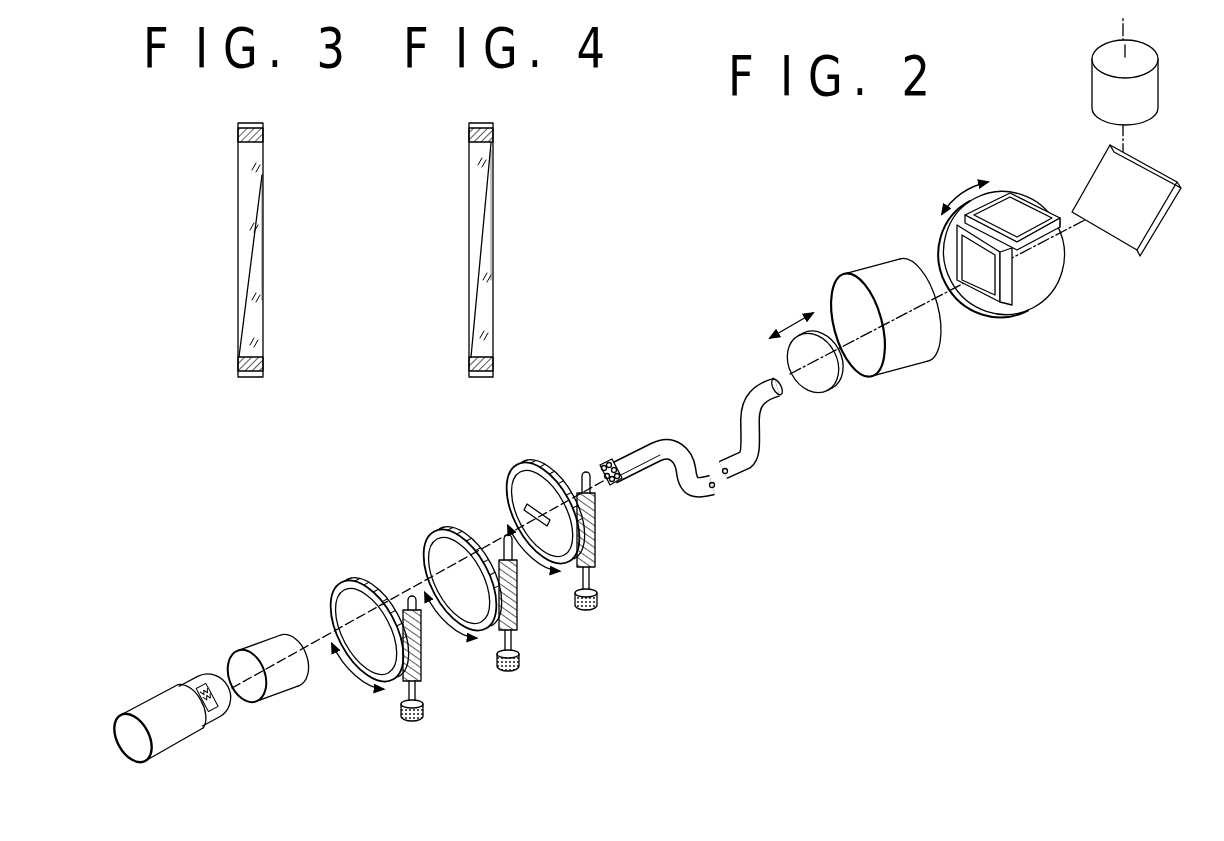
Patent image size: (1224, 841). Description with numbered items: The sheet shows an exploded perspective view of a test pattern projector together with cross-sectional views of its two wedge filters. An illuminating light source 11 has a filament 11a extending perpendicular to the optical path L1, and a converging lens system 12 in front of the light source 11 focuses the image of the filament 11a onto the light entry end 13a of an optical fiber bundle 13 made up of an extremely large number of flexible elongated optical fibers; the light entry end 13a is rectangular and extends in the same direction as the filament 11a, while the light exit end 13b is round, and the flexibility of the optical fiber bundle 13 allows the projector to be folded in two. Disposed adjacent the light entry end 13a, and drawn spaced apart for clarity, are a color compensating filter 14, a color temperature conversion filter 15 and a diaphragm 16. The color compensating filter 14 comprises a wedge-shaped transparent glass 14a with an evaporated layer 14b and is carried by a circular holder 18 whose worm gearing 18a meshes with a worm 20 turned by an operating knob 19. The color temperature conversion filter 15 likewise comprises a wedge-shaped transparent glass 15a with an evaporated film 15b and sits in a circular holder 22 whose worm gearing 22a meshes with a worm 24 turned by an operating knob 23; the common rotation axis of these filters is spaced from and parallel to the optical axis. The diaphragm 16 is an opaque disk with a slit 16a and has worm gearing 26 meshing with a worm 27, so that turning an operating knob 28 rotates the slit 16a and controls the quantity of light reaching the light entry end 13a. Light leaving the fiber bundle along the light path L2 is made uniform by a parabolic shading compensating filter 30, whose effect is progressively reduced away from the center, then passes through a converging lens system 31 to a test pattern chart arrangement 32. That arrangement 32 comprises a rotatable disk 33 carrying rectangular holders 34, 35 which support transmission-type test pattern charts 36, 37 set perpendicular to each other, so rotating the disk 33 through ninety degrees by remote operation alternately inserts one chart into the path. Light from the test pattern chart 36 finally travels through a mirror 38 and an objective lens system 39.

In FIG. 2, the illuminating light source 11 is at (157, 700).
In FIG. 2, the filament 11a is at (218, 680).
In FIG. 2, the converging lens system 12 is at (270, 643).
In FIG. 2, the optical fiber bundle 13 is at (742, 465).
In FIG. 2, the light entry end 13a is at (610, 488).
In FIG. 2, the light exit end 13b is at (787, 387).
In FIG. 2, the color compensating filter 14 is at (345, 607).
In FIG. 3, the wedge-shaped transparent glass 14a is at (240, 182).
In FIG. 3, the evaporated layer 14b is at (265, 290).
In FIG. 2, the color temperature conversion filter 15 is at (441, 548).
In FIG. 4, the wedge-shaped transparent glass 15a is at (493, 280).
In FIG. 4, the evaporated film 15b is at (473, 192).
In FIG. 2, the diaphragm 16 is at (515, 493).
In FIG. 2, the slit 16a is at (545, 512).
In FIG. 3, the circular holder 18 is at (238, 358).
In FIG. 2, the circular holder 18 is at (333, 622).
In FIG. 2, the worm gearing 18a is at (367, 583).
In FIG. 2, the operating knob 19 is at (403, 720).
In FIG. 2, the worm 20 is at (418, 657).
In FIG. 4, the circular holder 22 is at (495, 133).
In FIG. 2, the circular holder 22 is at (425, 575).
In FIG. 2, the worm gearing 22a is at (455, 533).
In FIG. 2, the operating knob 23 is at (509, 670).
In FIG. 2, the worm 24 is at (527, 610).
In FIG. 2, the worm gearing 26 is at (533, 465).
In FIG. 2, the worm 27 is at (598, 540).
In FIG. 2, the operating knob 28 is at (593, 608).
In FIG. 2, the parabolic shading compensating filter 30 is at (830, 378).
In FIG. 2, the converging lens system 31 is at (870, 283).
In FIG. 2, the test pattern chart arrangement 32 is at (943, 233).
In FIG. 2, the rotatable disk 33 is at (1032, 282).
In FIG. 2, the rectangular holder 34 is at (987, 308).
In FIG. 2, the rectangular holder 35 is at (1053, 232).
In FIG. 2, the test pattern chart 36 is at (963, 259).
In FIG. 2, the test pattern chart 37 is at (1020, 215).
In FIG. 2, the mirror 38 is at (1137, 220).
In FIG. 2, the objective lens system 39 is at (1150, 90).
In FIG. 2, the optical path L1 is at (308, 643).
In FIG. 2, the light path L2 is at (933, 297).